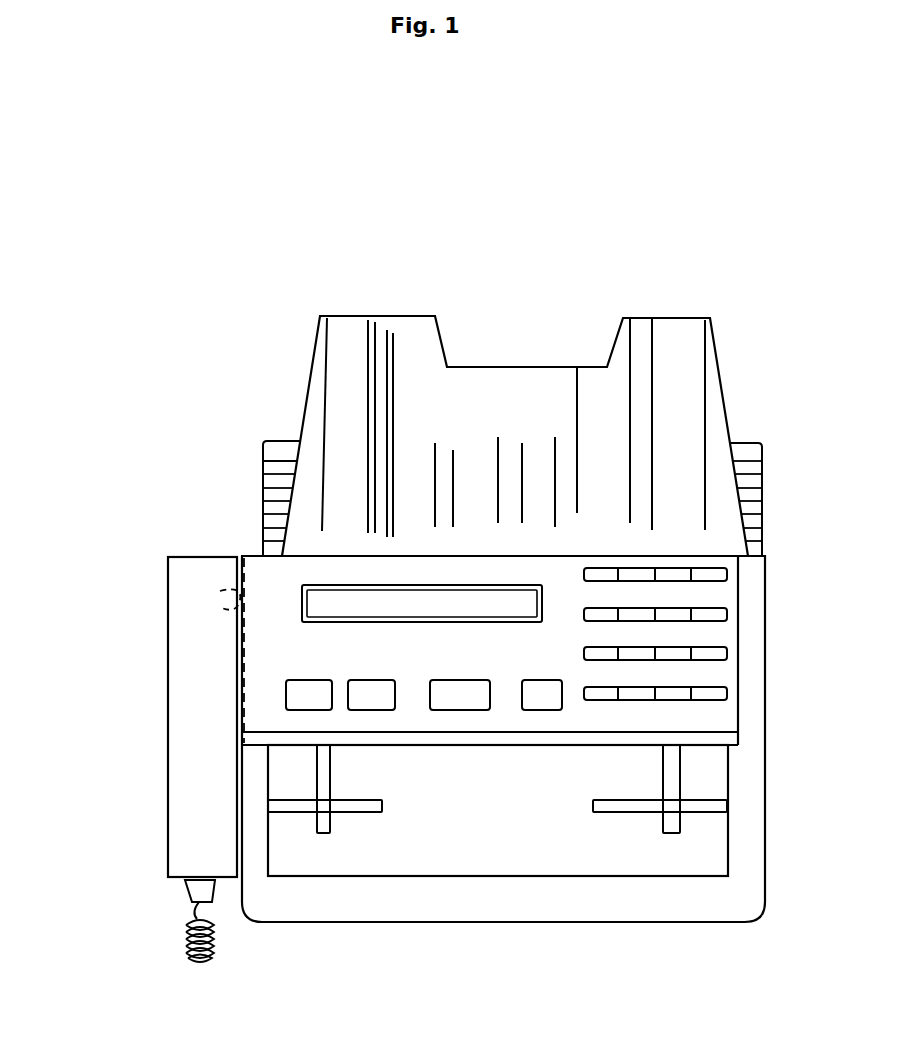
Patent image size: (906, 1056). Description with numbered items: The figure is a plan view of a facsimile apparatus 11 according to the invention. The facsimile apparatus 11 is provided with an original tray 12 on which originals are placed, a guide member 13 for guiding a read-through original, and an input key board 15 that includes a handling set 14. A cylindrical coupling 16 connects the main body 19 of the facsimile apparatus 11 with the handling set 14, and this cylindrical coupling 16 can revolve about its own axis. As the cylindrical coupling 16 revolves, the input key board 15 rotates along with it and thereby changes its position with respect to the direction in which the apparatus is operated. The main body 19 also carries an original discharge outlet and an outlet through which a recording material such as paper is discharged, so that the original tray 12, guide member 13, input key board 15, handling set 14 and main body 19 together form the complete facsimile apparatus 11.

The facsimile apparatus 11 is at (587, 960).
The original tray 12 is at (722, 378).
The guide member 13 is at (363, 812).
The handling set 14 is at (187, 737).
The input key board 15 is at (705, 607).
The cylindrical coupling 16 is at (220, 591).
The main body 19 is at (290, 898).